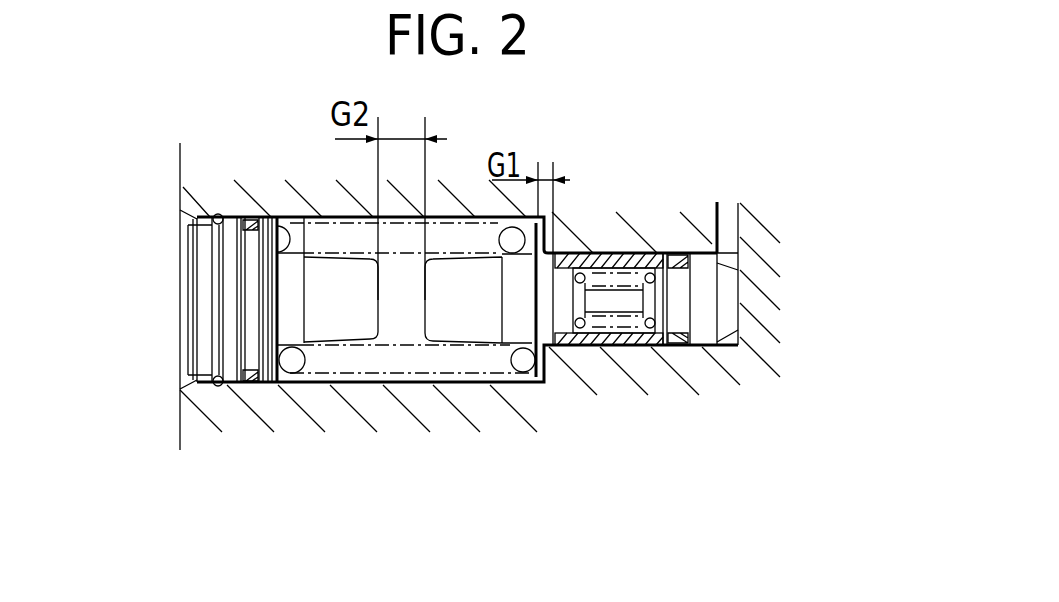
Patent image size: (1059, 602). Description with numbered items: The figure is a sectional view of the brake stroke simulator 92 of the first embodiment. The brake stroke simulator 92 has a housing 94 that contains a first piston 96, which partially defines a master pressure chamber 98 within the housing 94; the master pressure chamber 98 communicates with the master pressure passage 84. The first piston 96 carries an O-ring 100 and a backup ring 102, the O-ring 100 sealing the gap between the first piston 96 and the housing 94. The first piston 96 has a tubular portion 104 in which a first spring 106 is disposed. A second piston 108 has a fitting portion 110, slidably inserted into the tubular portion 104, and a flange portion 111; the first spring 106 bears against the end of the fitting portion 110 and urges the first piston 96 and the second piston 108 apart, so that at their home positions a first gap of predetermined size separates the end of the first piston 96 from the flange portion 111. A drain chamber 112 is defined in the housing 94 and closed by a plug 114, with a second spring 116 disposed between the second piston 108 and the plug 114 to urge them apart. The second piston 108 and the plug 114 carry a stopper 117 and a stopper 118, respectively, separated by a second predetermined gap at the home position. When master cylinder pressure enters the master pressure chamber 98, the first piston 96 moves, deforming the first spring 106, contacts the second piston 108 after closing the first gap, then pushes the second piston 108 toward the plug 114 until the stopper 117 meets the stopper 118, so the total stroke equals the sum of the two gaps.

The master pressure passage 84 is at (727, 237).
The brake stroke simulator 92 is at (468, 172).
The housing 94 is at (643, 222).
The first piston 96 is at (702, 328).
The master pressure chamber 98 is at (720, 347).
The O-ring 100 is at (681, 346).
The backup ring 102 is at (637, 325).
The tubular portion 104 is at (588, 335).
The first spring 106 is at (609, 275).
The second piston 108 is at (580, 487).
The fitting portion 110 is at (545, 325).
The flange portion 111 is at (534, 330).
The drain chamber 112 is at (395, 323).
The plug 114 is at (295, 262).
The second spring 116 is at (360, 355).
The stopper 117 is at (453, 317).
The stopper 118 is at (327, 317).